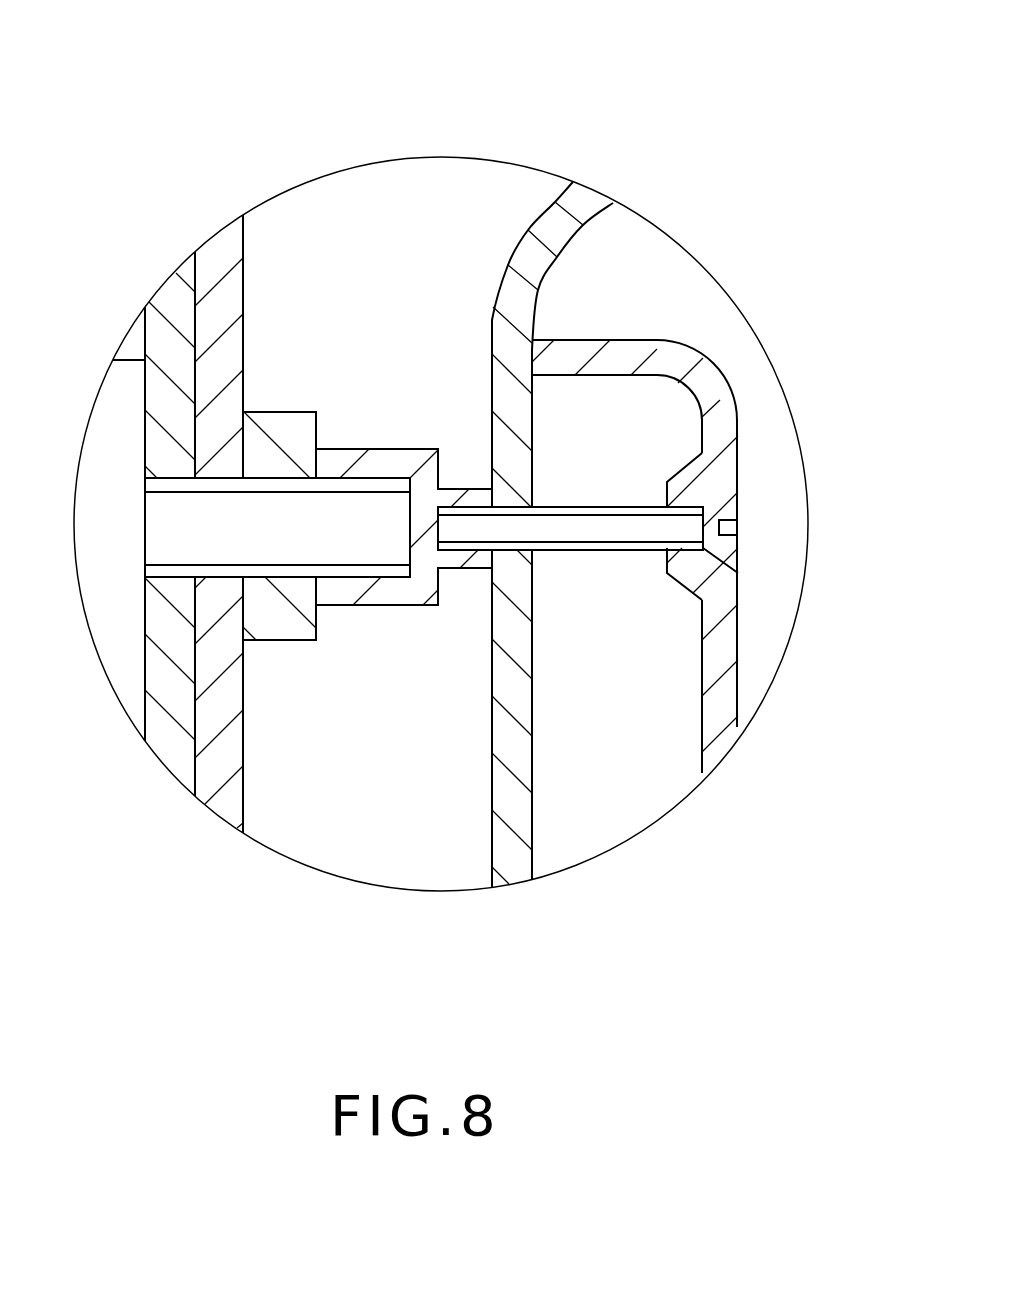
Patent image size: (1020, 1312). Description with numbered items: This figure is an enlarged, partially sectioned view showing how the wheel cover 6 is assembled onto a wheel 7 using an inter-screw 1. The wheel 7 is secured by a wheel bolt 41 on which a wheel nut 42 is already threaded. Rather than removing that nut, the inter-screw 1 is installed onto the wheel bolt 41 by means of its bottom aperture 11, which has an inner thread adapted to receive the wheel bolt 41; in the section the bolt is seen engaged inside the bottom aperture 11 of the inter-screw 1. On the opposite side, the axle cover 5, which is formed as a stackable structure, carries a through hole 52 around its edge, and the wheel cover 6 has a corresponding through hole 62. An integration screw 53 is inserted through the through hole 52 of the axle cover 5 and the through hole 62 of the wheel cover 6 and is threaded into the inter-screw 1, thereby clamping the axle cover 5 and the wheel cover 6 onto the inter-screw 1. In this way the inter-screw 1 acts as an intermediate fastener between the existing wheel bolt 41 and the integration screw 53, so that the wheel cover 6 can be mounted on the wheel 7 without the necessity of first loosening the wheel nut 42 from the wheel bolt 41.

The inter-screw 1 is at (397, 462).
The bottom aperture 11 is at (368, 475).
The wheel bolt 41 is at (228, 518).
The wheel nut 42 is at (285, 425).
The axle cover 5 is at (708, 388).
The through hole 52 is at (712, 559).
The integration screw 53 is at (577, 525).
The wheel cover 6 is at (533, 270).
The through hole 62 is at (500, 550).
The wheel 7 is at (223, 260).